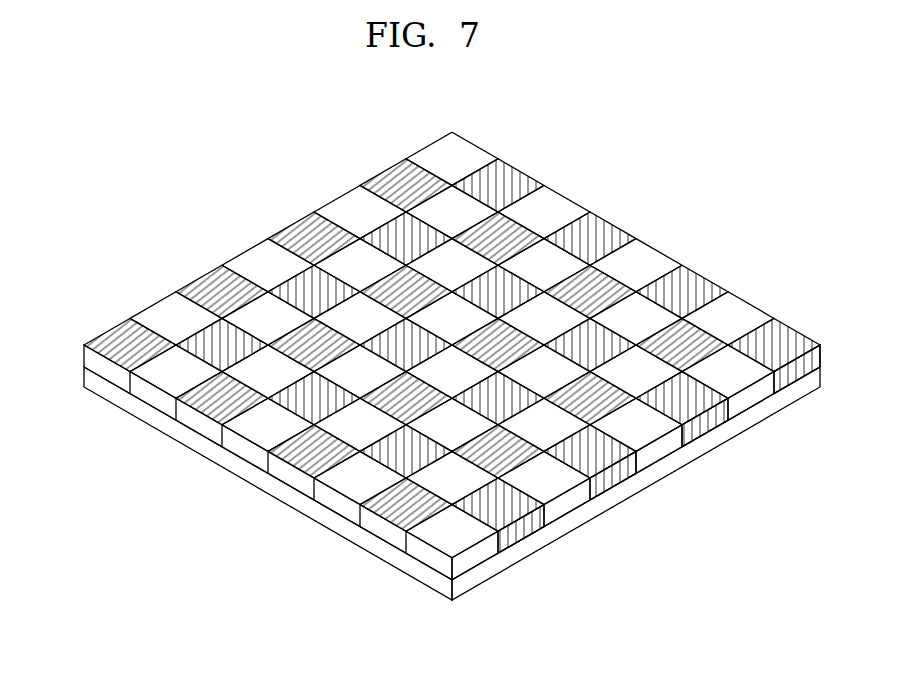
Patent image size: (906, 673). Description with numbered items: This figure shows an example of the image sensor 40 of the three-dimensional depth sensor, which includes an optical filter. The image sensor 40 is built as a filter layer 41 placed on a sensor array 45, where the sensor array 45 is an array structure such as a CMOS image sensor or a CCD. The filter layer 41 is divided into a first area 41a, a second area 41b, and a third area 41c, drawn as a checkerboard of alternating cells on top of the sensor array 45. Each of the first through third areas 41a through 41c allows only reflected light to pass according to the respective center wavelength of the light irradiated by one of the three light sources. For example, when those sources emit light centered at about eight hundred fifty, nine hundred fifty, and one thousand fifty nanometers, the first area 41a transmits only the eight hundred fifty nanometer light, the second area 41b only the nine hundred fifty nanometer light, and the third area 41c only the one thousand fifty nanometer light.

The image sensor 40 is at (685, 164).
The filter layer 41 is at (177, 215).
The first area 41a is at (117, 342).
The second area 41b is at (163, 310).
The third area 41c is at (222, 335).
The sensor array 45 is at (90, 386).